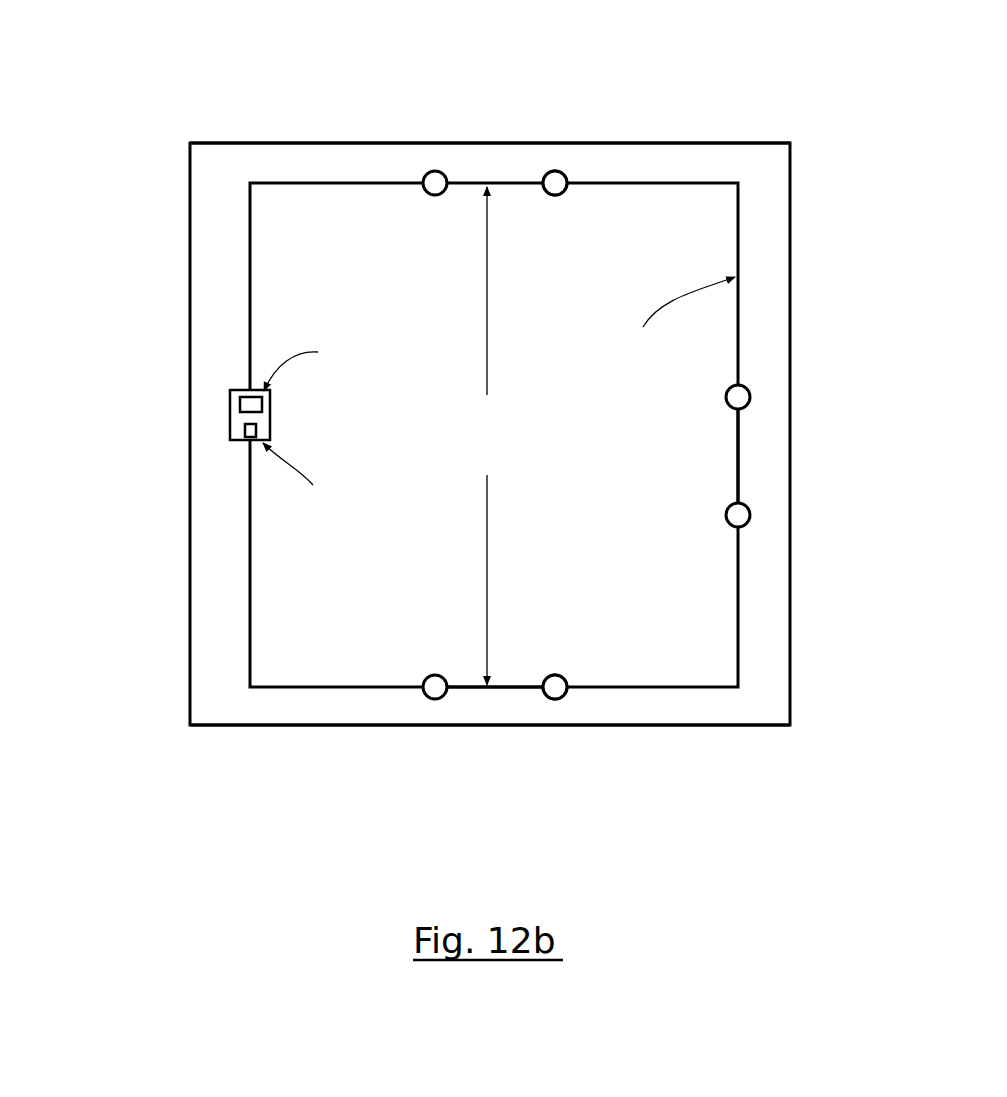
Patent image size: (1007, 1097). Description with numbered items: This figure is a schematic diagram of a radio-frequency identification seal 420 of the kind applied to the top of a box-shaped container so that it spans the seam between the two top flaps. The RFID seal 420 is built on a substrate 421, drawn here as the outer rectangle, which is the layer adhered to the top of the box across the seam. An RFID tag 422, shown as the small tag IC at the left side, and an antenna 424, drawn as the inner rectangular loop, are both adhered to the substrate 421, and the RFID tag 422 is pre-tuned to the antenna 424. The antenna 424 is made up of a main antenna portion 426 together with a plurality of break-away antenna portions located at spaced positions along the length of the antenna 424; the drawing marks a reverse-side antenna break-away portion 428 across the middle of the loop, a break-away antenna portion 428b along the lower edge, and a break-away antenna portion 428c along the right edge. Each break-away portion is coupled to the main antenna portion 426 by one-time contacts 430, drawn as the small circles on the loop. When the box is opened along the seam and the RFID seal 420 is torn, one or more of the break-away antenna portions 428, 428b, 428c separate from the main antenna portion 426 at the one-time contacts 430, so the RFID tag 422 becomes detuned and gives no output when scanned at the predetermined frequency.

The RFID seal 420 is at (128, 163).
The substrate 421 is at (360, 165).
The RFID tag 422 is at (240, 420).
The antenna 424 is at (757, 213).
The main antenna portion 426 is at (313, 688).
The break-away antenna portion 428 is at (485, 183).
The break-away antenna portion 428b is at (470, 690).
The break-away antenna portion 428c is at (738, 462).
The one-time contacts 430 is at (566, 178).